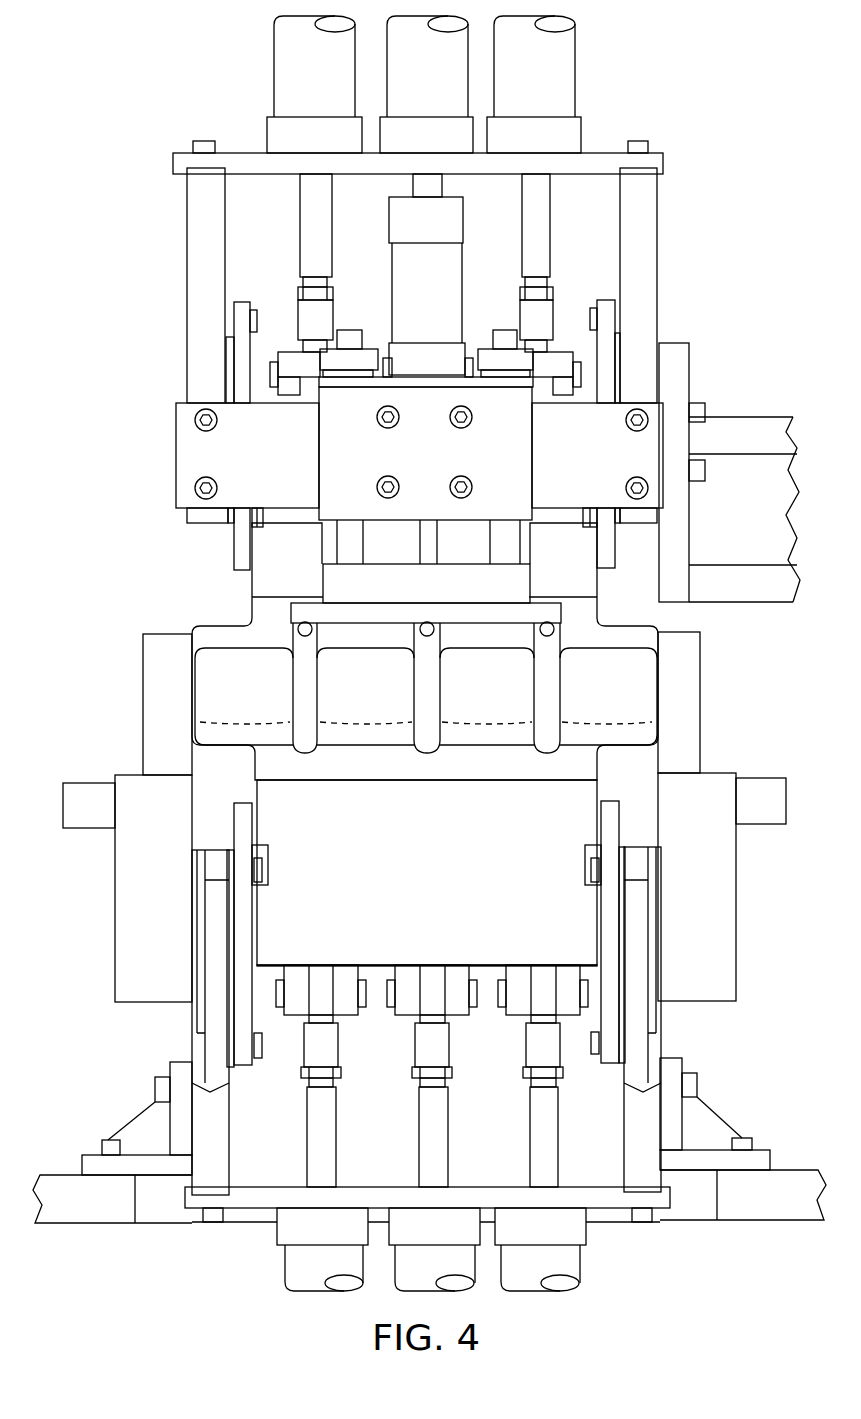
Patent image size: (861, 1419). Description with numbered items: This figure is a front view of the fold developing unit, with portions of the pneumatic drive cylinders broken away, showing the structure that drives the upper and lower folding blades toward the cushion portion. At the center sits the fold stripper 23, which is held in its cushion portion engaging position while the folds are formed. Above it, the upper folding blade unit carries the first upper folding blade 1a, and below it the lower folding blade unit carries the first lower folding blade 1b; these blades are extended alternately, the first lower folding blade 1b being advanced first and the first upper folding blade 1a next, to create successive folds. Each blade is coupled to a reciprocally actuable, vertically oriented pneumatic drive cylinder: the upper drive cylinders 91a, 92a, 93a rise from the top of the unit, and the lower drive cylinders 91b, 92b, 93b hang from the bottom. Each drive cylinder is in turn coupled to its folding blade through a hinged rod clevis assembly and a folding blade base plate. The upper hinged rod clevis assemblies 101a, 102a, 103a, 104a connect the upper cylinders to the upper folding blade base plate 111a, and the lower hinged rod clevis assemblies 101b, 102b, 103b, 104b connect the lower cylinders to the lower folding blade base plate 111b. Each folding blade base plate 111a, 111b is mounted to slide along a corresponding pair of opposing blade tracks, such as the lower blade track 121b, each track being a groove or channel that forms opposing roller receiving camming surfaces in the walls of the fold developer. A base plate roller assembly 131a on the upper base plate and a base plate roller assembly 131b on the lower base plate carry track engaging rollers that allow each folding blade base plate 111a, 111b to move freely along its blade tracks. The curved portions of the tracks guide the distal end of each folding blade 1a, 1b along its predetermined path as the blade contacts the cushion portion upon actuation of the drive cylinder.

The first upper folding blade 1a is at (647, 626).
The first lower folding blade 1b is at (661, 743).
The fold stripper 23 is at (436, 466).
The pneumatic drive cylinder 91a is at (403, 150).
The pneumatic drive cylinder 92a is at (289, 150).
The pneumatic drive cylinder 93a is at (509, 150).
The hinged rod clevis assembly 101a is at (387, 357).
The hinged rod clevis assembly 102a is at (277, 352).
The hinged rod clevis assembly 103a is at (573, 347).
The hinged rod clevis assembly 104a is at (474, 334).
The folding blade base plate 111a is at (308, 567).
The base plate roller assembly 131a is at (240, 323).
The pneumatic drive cylinder 91b is at (412, 1242).
The pneumatic drive cylinder 92b is at (298, 1242).
The pneumatic drive cylinder 93b is at (516, 1242).
The hinged rod clevis assembly 101b is at (467, 1017).
The hinged rod clevis assembly 102b is at (297, 1015).
The hinged rod clevis assembly 103b is at (563, 1017).
The hinged rod clevis assembly 104b is at (398, 1032).
The folding blade base plate 111b is at (439, 890).
The blade track 121b is at (210, 1012).
The base plate roller assembly 131b is at (234, 814).